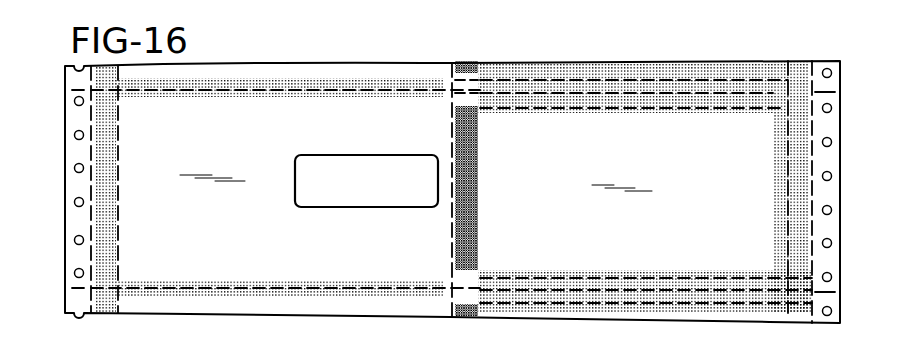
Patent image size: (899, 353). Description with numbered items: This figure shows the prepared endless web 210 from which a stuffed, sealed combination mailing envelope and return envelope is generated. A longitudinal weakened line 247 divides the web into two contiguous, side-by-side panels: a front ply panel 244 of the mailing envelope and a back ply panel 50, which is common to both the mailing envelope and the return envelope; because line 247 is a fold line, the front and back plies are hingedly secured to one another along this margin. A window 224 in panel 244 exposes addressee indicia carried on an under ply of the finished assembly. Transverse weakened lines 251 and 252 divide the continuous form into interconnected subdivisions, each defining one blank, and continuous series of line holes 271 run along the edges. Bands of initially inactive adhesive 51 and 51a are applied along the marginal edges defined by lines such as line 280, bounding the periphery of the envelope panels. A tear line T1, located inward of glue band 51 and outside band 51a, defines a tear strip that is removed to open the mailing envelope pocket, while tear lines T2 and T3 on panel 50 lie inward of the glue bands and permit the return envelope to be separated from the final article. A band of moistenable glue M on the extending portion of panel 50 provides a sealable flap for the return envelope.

The back ply panel 50 is at (608, 74).
The adhesive 51 is at (110, 136).
The adhesive band 51a is at (774, 156).
The front ply panel 244 is at (307, 78).
The transverse weakened line 251 is at (263, 90).
The transverse weakened line 252 is at (263, 288).
The marginal line 280 is at (91, 258).
The tear line T1 is at (118, 186).
The line holes 271 is at (75, 203).
The longitudinal weakened line 247 is at (455, 228).
The endless web 210 is at (459, 56).
The moistenable glue M is at (474, 170).
The tear line T2 is at (648, 108).
The tear line T3 is at (612, 278).
The window 224 is at (378, 155).